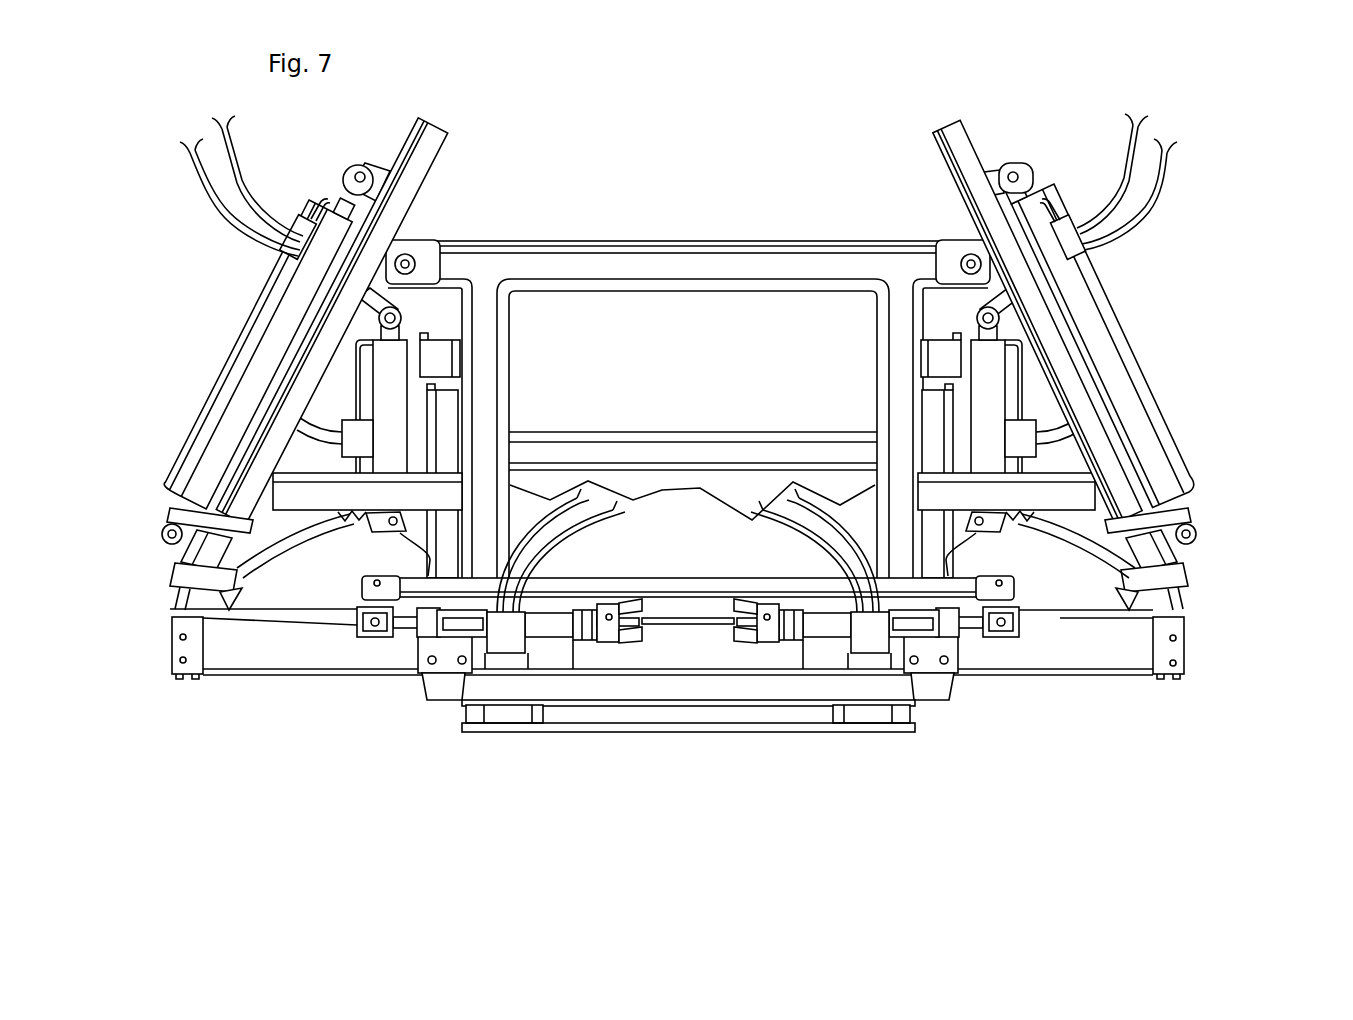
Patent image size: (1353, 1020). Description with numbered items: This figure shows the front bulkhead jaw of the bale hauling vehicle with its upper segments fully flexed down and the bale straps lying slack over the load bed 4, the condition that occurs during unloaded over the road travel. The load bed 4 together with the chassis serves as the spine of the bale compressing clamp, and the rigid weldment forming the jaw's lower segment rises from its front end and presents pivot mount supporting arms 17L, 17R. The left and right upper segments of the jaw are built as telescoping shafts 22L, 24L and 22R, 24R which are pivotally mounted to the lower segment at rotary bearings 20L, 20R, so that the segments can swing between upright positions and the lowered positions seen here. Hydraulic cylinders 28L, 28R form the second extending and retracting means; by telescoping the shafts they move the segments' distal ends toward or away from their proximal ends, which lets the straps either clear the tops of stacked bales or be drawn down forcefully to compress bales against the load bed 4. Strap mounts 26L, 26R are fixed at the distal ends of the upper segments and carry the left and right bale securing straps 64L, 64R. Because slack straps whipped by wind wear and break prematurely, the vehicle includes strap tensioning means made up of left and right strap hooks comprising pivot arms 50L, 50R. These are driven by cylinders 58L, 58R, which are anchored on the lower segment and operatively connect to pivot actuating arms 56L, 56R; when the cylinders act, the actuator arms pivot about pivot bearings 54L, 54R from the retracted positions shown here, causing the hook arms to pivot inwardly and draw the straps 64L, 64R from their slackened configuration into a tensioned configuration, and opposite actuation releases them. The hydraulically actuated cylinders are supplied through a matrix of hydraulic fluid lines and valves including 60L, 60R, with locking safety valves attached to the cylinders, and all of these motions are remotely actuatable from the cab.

The load bed 4 is at (677, 533).
The pivot mount supporting arm 17R is at (427, 605).
The pivot mount supporting arm 17L is at (950, 605).
The rotary bearing 20R is at (408, 253).
The rotary bearing 20L is at (966, 262).
The telescoping shaft 22R is at (322, 368).
The telescoping shaft 22L is at (1052, 348).
The telescoping shaft 24R is at (208, 558).
The telescoping shaft 24L is at (1172, 560).
The strap mount 26R is at (240, 600).
The strap mount 26L is at (1140, 596).
The hydraulic cylinder 28R is at (222, 437).
The hydraulic cylinder 28L is at (1132, 416).
The pivot arm 50R is at (288, 622).
The pivot arm 50L is at (1103, 622).
The pivot bearing 54R is at (368, 576).
The pivot bearing 54L is at (1013, 588).
The pivot actuating arm 56R is at (360, 608).
The pivot actuating arm 56L is at (1012, 630).
The cylinder 58R is at (578, 640).
The cylinder 58L is at (958, 640).
The hydraulic fluid lines and valves 60R is at (510, 640).
The hydraulic fluid lines and valves 60L is at (880, 655).
The bale securing strap 64R is at (303, 543).
The bale securing strap 64L is at (1035, 530).